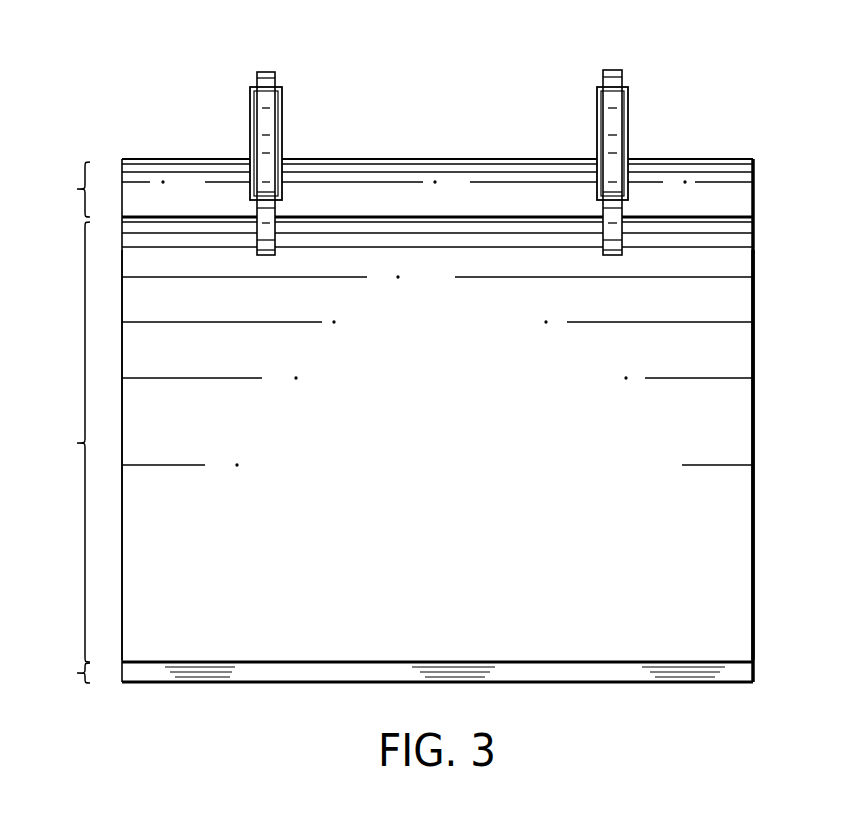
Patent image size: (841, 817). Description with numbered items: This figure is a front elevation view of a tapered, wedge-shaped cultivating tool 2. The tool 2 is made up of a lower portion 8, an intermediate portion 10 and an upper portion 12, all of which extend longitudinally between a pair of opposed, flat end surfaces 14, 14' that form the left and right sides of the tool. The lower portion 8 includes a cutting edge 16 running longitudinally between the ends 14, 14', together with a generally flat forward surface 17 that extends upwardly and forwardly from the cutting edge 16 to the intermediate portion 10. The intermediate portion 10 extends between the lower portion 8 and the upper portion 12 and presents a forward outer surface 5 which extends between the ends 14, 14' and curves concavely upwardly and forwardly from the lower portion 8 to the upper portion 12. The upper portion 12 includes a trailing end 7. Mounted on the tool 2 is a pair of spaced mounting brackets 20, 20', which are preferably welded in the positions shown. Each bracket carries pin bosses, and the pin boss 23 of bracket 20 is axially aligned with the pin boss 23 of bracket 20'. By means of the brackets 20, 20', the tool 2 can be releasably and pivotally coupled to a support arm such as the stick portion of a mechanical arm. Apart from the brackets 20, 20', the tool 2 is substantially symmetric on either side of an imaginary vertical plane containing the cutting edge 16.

The cultivating tool 2 is at (155, 114).
The forward outer surface 5 is at (437, 434).
The trailing end 7 is at (407, 190).
The lower portion 8 is at (402, 675).
The intermediate portion 10 is at (398, 439).
The upper portion 12 is at (66, 189).
The end surface 14 is at (107, 455).
The end surface 14' is at (788, 455).
The cutting edge 16 is at (310, 688).
The forward surface 17 is at (598, 672).
The mounting bracket 20 is at (243, 144).
The mounting bracket 20' is at (582, 143).
The pin boss 23 is at (285, 173).